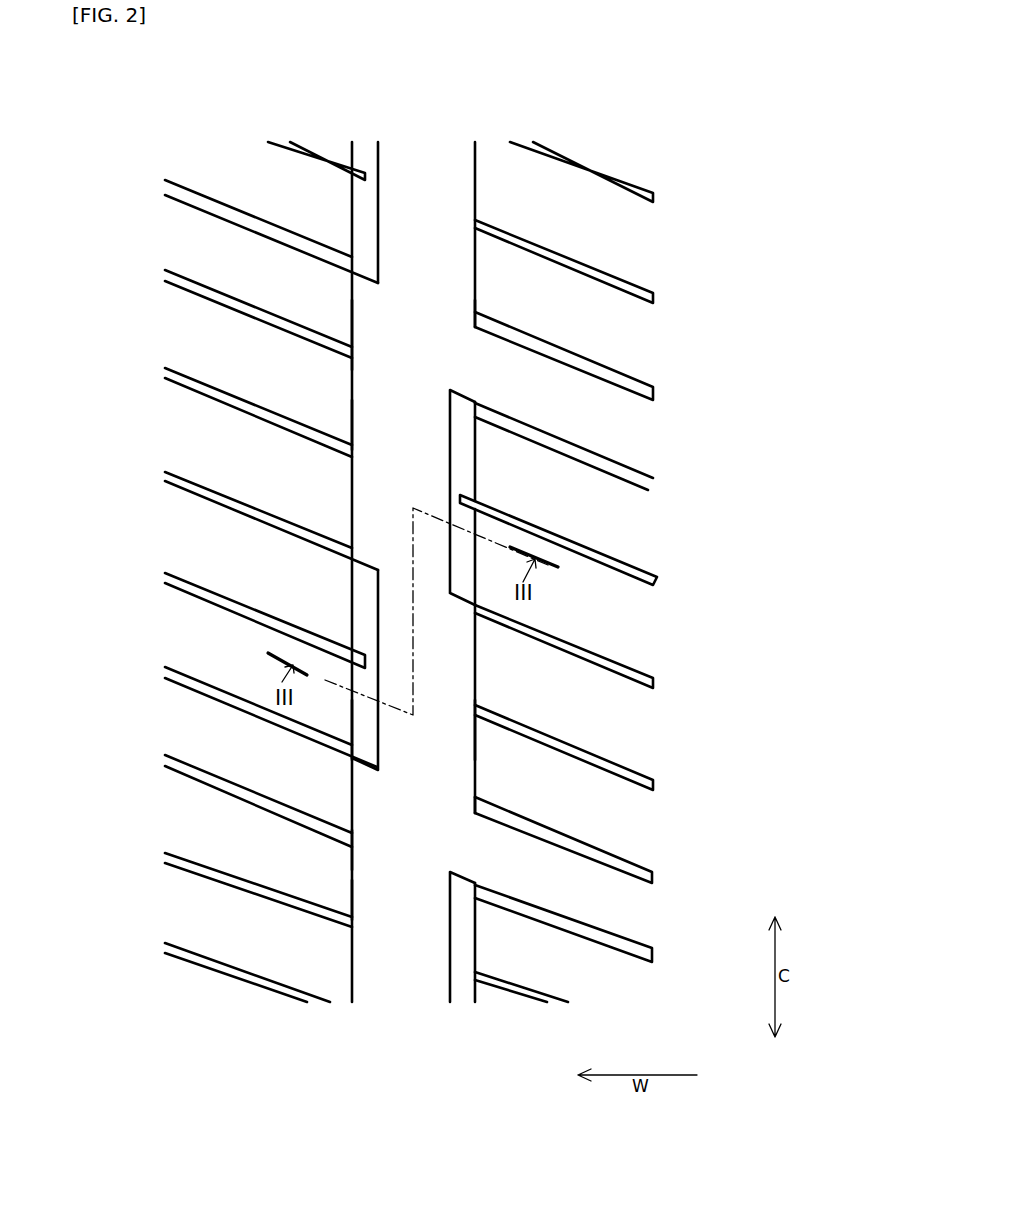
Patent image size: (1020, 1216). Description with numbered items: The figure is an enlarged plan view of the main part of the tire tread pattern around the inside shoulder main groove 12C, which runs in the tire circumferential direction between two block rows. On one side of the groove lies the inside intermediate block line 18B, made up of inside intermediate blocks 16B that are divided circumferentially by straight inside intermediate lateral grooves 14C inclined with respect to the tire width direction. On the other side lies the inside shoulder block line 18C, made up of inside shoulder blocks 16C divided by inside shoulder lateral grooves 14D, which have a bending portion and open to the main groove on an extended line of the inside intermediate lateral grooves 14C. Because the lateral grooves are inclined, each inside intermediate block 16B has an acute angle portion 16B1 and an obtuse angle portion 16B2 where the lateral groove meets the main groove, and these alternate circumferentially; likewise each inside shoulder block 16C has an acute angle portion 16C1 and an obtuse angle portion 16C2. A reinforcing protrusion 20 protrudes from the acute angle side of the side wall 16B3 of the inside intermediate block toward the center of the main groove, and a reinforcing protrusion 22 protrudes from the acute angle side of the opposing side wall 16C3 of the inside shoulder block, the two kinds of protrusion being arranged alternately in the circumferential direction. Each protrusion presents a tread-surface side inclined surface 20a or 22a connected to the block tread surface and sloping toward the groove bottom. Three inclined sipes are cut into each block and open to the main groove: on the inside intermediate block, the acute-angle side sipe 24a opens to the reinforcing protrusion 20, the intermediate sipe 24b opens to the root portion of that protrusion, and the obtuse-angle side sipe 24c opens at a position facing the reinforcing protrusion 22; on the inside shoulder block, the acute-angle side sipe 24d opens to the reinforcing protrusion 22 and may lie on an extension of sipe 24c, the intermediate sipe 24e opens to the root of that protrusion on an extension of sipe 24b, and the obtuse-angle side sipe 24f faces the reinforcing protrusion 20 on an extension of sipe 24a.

The inside shoulder main groove 12C is at (413, 1009).
The inside intermediate lateral groove 14C is at (568, 405).
The inside shoulder lateral groove 14D is at (243, 272).
The inside intermediate block 16B is at (610, 232).
The acute angle portion 16B1 is at (482, 426).
The obtuse angle portion 16B2 is at (480, 310).
The side wall 16B3 is at (475, 733).
The inside shoulder block 16C is at (228, 552).
The acute angle portion 16C1 is at (347, 735).
The obtuse angle portion 16C2 is at (345, 370).
The side wall 16C3 is at (352, 423).
The inside intermediate block line 18B is at (577, 132).
The inside shoulder block line 18C is at (260, 132).
The reinforcing protrusion 20 is at (423, 648).
The tread-surface side inclined surface 20a is at (450, 433).
The reinforcing protrusion 22 is at (401, 425).
The tread-surface side inclined surface 22a is at (367, 155).
The inside intermediate block acute-angle side sipe 24a is at (604, 551).
The intermediate sipe 24b is at (604, 652).
The inside intermediate block obtuse-angle side sipe 24c is at (604, 268).
The inside shoulder block acute-angle side sipe 24d is at (245, 606).
The intermediate sipe 24e is at (262, 498).
The inside shoulder block obtuse-angle side sipe 24f is at (262, 395).